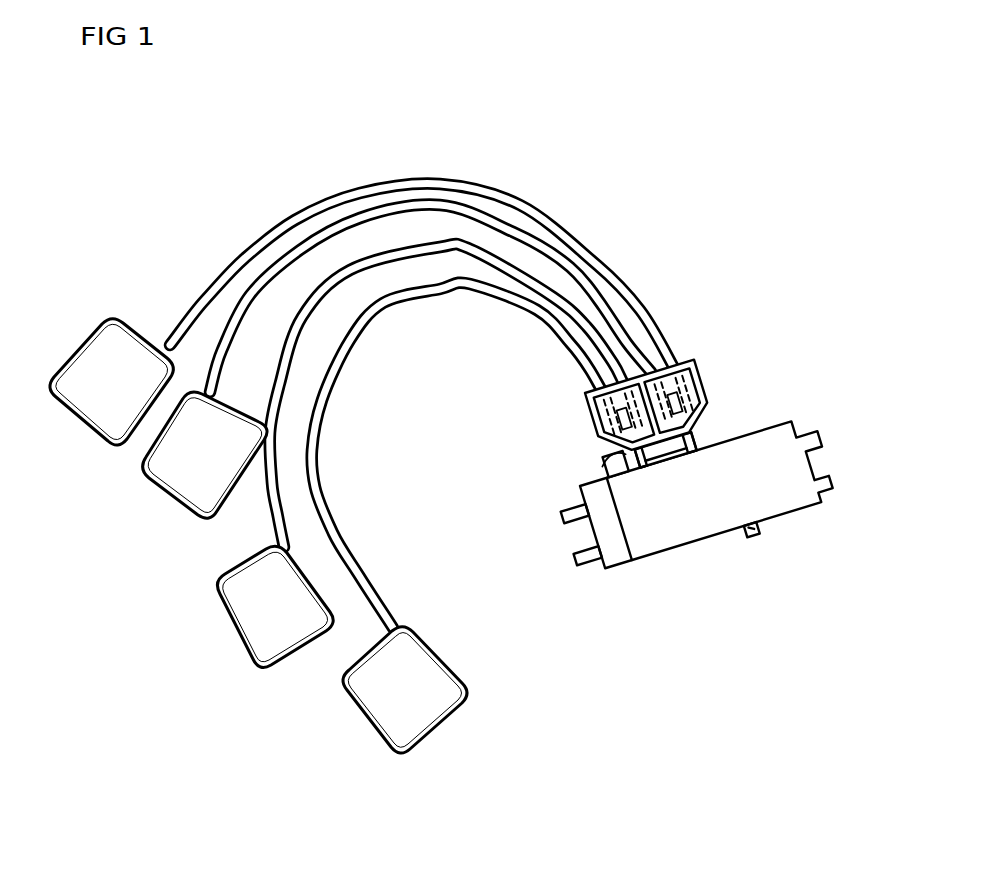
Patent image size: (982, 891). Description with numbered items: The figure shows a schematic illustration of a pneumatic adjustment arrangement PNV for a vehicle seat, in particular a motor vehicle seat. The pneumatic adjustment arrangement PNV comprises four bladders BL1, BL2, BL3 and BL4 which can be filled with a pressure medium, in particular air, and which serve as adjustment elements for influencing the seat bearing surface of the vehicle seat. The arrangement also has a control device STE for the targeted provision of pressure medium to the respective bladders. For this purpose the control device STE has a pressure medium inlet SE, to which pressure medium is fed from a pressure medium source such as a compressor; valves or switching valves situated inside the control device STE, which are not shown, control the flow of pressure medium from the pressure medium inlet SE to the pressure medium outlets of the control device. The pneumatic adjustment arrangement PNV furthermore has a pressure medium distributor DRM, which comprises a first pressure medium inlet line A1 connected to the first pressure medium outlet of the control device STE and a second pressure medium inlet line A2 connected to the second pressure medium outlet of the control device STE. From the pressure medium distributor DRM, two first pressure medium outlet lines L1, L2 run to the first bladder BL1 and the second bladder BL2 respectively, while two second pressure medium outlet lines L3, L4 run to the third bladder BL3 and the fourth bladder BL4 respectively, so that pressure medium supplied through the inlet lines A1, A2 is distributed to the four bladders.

The pneumatic adjustment arrangement PNV is at (713, 208).
The first pressure medium outlet line L1 is at (397, 303).
The first pressure medium outlet line L2 is at (300, 327).
The second pressure medium outlet line L3 is at (479, 191).
The second pressure medium outlet line L4 is at (528, 205).
The first bladder BL1 is at (383, 710).
The second bladder BL2 is at (247, 625).
The third bladder BL3 is at (192, 484).
The fourth bladder BL4 is at (108, 345).
The pressure medium distributor DRM is at (705, 367).
The first pressure medium inlet line A1 is at (603, 457).
The second pressure medium inlet line A2 is at (693, 437).
The control device STE is at (685, 525).
The pressure medium inlet SE is at (752, 532).